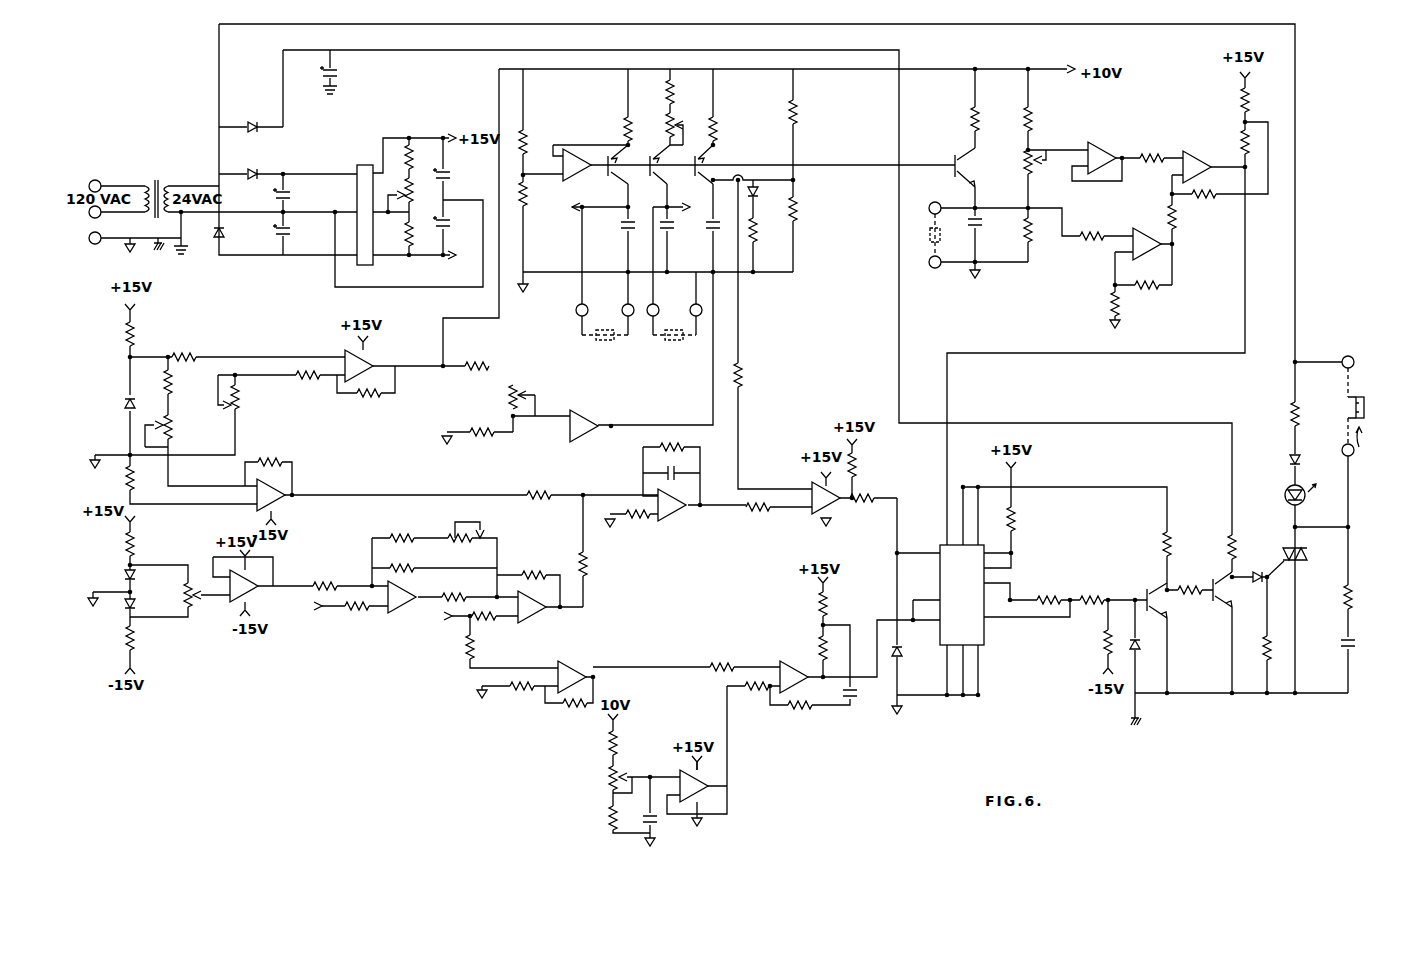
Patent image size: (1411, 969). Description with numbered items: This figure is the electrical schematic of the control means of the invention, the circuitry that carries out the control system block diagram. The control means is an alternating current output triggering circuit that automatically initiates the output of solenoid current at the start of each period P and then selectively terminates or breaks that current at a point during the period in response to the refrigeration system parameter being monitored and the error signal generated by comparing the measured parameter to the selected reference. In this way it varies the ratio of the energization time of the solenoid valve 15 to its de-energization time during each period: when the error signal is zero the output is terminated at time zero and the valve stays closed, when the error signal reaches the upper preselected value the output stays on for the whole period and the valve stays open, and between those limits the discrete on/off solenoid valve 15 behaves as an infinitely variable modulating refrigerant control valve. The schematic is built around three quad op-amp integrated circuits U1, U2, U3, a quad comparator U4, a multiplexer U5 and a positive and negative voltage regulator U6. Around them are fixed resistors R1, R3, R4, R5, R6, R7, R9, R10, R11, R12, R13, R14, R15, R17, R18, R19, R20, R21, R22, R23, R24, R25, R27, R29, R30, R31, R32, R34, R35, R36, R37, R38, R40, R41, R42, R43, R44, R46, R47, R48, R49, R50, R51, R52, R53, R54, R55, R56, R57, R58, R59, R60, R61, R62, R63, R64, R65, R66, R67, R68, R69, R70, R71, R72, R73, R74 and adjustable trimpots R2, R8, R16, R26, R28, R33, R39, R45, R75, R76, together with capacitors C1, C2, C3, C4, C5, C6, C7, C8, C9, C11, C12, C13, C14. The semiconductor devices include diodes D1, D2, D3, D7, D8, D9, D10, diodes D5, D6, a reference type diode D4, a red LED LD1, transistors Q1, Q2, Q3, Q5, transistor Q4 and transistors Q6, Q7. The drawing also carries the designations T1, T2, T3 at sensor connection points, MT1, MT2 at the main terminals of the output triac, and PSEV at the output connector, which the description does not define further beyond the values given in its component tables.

The resistor R1 is at (421, 157).
The trimpot R2 is at (417, 190).
The resistor R3 is at (398, 234).
The resistor R4 is at (535, 142).
The resistor R5 is at (535, 194).
The resistor R6 is at (615, 129).
The resistor R7 is at (659, 92).
The trimpot R8 is at (661, 125).
The resistor R9 is at (725, 129).
The resistor R10 is at (770, 230).
The resistor R11 is at (809, 112).
The resistor R12 is at (809, 209).
The resistor R13 is at (991, 119).
The resistor R14 is at (1047, 119).
The resistor R15 is at (1044, 234).
The trimpot R16 is at (1093, 229).
The resistor R17 is at (1148, 149).
The resistor R18 is at (1148, 278).
The resistor R19 is at (1188, 217).
The resistor R20 is at (1210, 187).
The resistor R21 is at (1227, 100).
The resistor R22 is at (1227, 142).
The resistor R23 is at (148, 334).
The resistor R24 is at (191, 349).
The resistor R25 is at (184, 382).
The trimpot R26 is at (180, 427).
The resistor R27 is at (146, 478).
The trimpot R28 is at (248, 398).
The resistor R29 is at (273, 455).
The resistor R30 is at (305, 368).
The resistor R31 is at (147, 544).
The resistor R32 is at (147, 638).
The trimpot R33 is at (173, 595).
The resistor R34 is at (370, 403).
The resistor R35 is at (327, 575).
The resistor R36 is at (355, 617).
The resistor R37 is at (398, 530).
The resistor R38 is at (401, 561).
The trimpot R39 is at (466, 546).
The resistor R40 is at (460, 589).
The resistor R41 is at (485, 609).
The resistor R42 is at (487, 647).
The resistor R43 is at (518, 699).
The resistor R44 is at (481, 357).
The trimpot R45 is at (502, 400).
The resistor R46 is at (508, 435).
The resistor R47 is at (542, 486).
The resistor R48 is at (535, 567).
The resistor R49 is at (573, 716).
The resistor R50 is at (588, 744).
The resistor R51 is at (596, 778).
The resistor R52 is at (595, 818).
The resistor R53 is at (671, 466).
The resistor R54 is at (634, 526).
The resistor R55 is at (755, 375).
The resistor R56 is at (750, 499).
The resistor R57 is at (725, 654).
The resistor R58 is at (748, 695).
The resistor R59 is at (797, 716).
The resistor R60 is at (868, 508).
The resistor R61 is at (840, 604).
The resistor R62 is at (803, 647).
The resistor R63 is at (1028, 519).
The resistor R64 is at (1049, 591).
The resistor R65 is at (1095, 591).
The resistor R66 is at (1089, 642).
The resistor R67 is at (1183, 544).
The resistor R68 is at (1186, 581).
The resistor R69 is at (1249, 547).
The resistor R70 is at (1312, 414).
The resistor R71 is at (1252, 648).
The resistor R72 is at (1365, 597).
The resistor R73 is at (599, 564).
The resistor R74 is at (870, 475).
The trimpot R75 is at (1132, 306).
The trimpot R76 is at (1045, 167).
The capacitor C1 is at (293, 197).
The capacitor C2 is at (293, 232).
The capacitor C3 is at (341, 74).
The capacitor C4 is at (451, 176).
The capacitor C5 is at (451, 224).
The capacitor C6 is at (616, 230).
The capacitor C7 is at (676, 234).
The capacitor C8 is at (721, 233).
The capacitor C9 is at (986, 224).
The capacitor C11 is at (671, 467).
The capacitor C12 is at (665, 829).
The capacitor C13 is at (865, 695).
The capacitor C14 is at (1364, 645).
The diode D1 is at (246, 118).
The diode D2 is at (248, 165).
The diode D3 is at (232, 233).
The diode D4 is at (113, 405).
The diode D5 is at (118, 577).
The diode D6 is at (143, 606).
The diode D7 is at (909, 654).
The diode D8 is at (1146, 647).
The diode D9 is at (1251, 570).
The diode D10 is at (1313, 461).
The transistor Q1 is at (622, 164).
The transistor Q2 is at (665, 164).
The transistor Q3 is at (709, 164).
The transistor Q4 is at (766, 195).
The transistor Q5 is at (980, 167).
The transistor Q6 is at (1164, 601).
The transistor Q7 is at (1227, 589).
The quad op-amp integrated circuit U1 is at (288, 503).
The quad op-amp integrated circuit U2 is at (683, 520).
The quad op-amp integrated circuit U3 is at (1108, 145).
The quad comparator integrated circuit U4 is at (834, 518).
The multiplexer integrated circuit U5 is at (962, 595).
The voltage regulator integrated circuit U6 is at (361, 206).
The temperature sensor T1 is at (465, 407).
The temperature sensor T2 is at (564, 464).
The temperature sensor T3 is at (920, 235).
The LED LD1 is at (1309, 504).
The triac main terminal 1 MT1 is at (1308, 565).
The triac main terminal 2 MT2 is at (1308, 545).
The pressure switch electric valve PSEV is at (1369, 406).
The solenoid valve 15 is at (1370, 444).